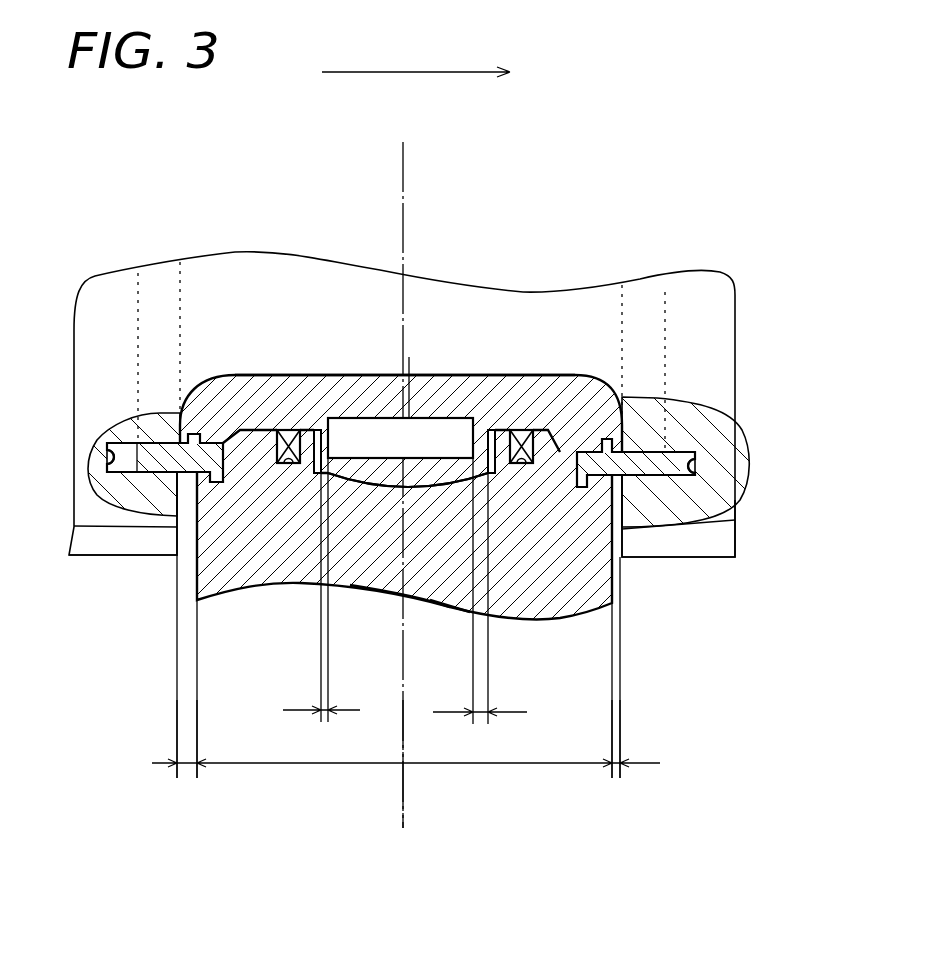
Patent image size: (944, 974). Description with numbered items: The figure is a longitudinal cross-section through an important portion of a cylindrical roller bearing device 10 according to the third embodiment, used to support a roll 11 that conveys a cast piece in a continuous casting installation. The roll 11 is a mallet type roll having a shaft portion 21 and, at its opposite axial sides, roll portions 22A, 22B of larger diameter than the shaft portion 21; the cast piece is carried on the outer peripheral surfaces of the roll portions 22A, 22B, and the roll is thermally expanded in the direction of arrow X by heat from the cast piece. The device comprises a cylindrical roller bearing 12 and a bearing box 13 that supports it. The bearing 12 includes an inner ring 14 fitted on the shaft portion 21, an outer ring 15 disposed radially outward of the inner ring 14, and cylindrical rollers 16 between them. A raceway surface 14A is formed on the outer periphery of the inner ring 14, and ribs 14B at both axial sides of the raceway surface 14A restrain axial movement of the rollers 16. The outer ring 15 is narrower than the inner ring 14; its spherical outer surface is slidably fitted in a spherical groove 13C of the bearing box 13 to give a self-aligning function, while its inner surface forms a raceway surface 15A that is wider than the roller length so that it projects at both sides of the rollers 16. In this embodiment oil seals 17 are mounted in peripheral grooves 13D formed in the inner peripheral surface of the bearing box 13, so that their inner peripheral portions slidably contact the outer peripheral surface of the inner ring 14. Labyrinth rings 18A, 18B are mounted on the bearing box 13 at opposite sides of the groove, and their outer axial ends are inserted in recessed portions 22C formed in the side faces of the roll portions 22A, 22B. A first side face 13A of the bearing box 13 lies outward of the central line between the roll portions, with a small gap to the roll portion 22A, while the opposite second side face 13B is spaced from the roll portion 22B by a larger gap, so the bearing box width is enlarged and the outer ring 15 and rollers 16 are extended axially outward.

The cylindrical roller bearing device 10 is at (660, 218).
The roll 11 is at (86, 563).
The cylindrical roller bearing 12 is at (563, 364).
The bearing box 13 is at (397, 470).
The first side face 13A is at (735, 520).
The second side face 13B is at (74, 526).
The spherical groove 13C is at (355, 474).
The peripheral grooves 13D is at (288, 465).
The inner ring 14 is at (242, 392).
The raceway surface 14A is at (393, 430).
The ribs 14B is at (322, 430).
The outer ring 15 is at (396, 616).
The raceway surface 15A is at (443, 465).
The cylindrical rollers 16 is at (448, 458).
The oil seals 17 is at (298, 428).
The labyrinth ring 18A is at (672, 452).
The labyrinth ring 18B is at (157, 443).
The shaft portion 21 is at (540, 303).
The roll portion 22A is at (717, 558).
The roll portion 22B is at (122, 555).
The recessed portions 22C is at (107, 453).